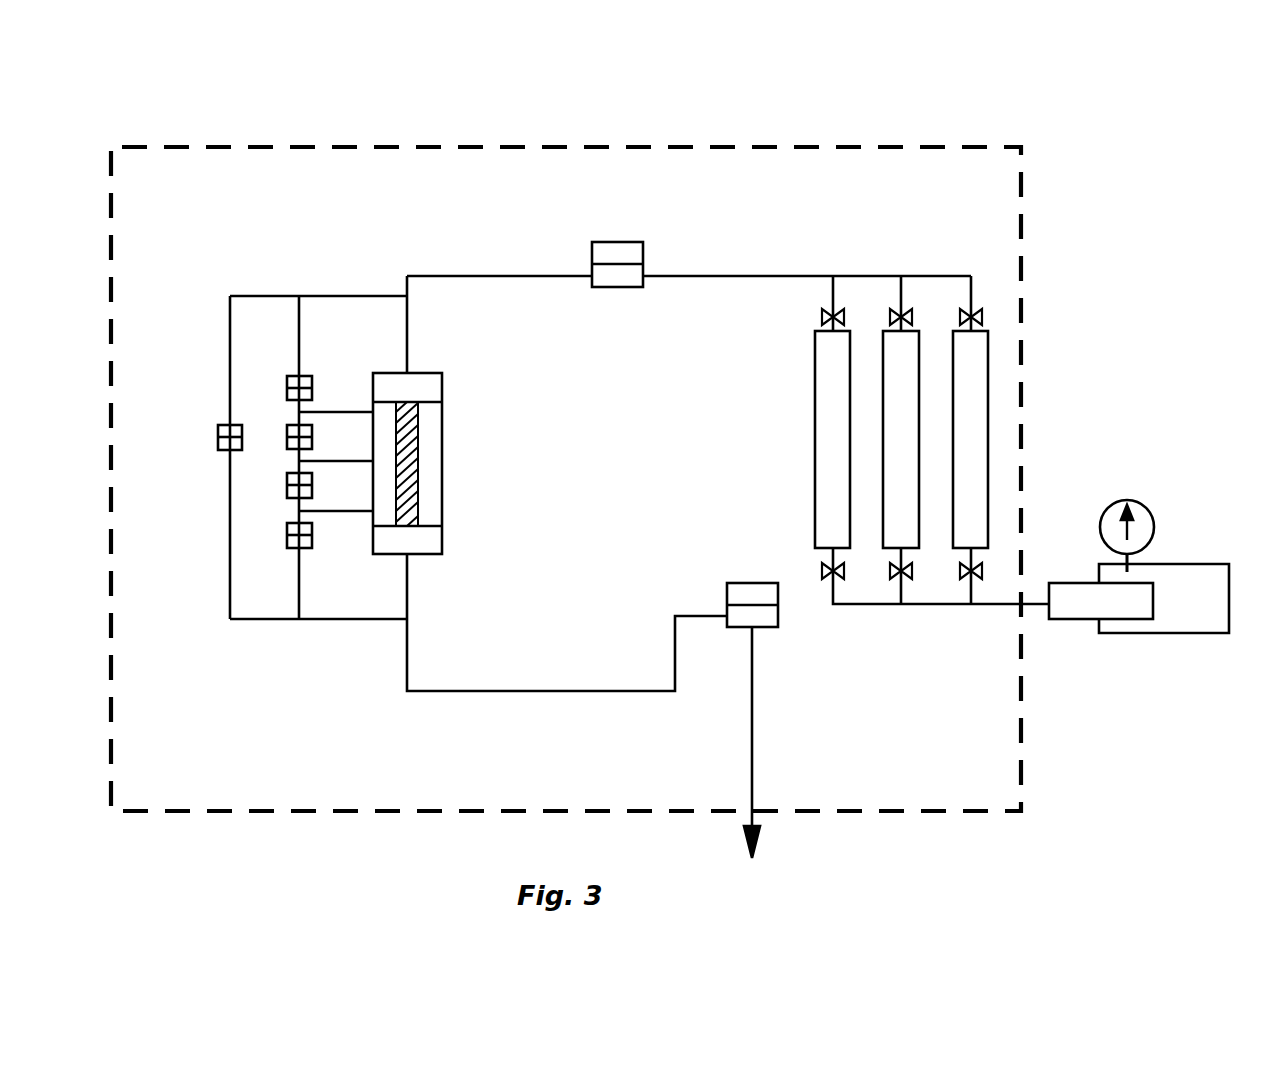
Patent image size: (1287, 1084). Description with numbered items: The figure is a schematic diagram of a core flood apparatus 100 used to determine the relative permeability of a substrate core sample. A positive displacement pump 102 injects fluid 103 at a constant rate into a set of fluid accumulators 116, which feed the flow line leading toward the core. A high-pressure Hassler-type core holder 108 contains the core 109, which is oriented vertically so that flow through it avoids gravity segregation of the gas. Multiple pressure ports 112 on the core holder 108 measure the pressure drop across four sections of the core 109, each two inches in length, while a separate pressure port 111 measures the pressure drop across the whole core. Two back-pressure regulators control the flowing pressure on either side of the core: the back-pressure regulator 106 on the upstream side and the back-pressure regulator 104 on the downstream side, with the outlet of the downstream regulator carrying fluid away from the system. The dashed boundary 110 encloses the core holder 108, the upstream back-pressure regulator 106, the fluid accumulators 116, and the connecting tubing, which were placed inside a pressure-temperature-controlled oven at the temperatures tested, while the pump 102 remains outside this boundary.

The core flood apparatus 100 is at (978, 106).
The positive displacement pump 102 is at (1210, 573).
The fluid 103 is at (1030, 605).
The back-pressure regulator 104 is at (750, 580).
The back-pressure regulator 106 is at (622, 288).
The core holder 108 is at (443, 416).
The core 109 is at (412, 472).
The enclosure 110 is at (1024, 258).
The pressure port 111 is at (218, 432).
The pressure ports 112 is at (287, 432).
The fluid accumulators 116 is at (975, 418).